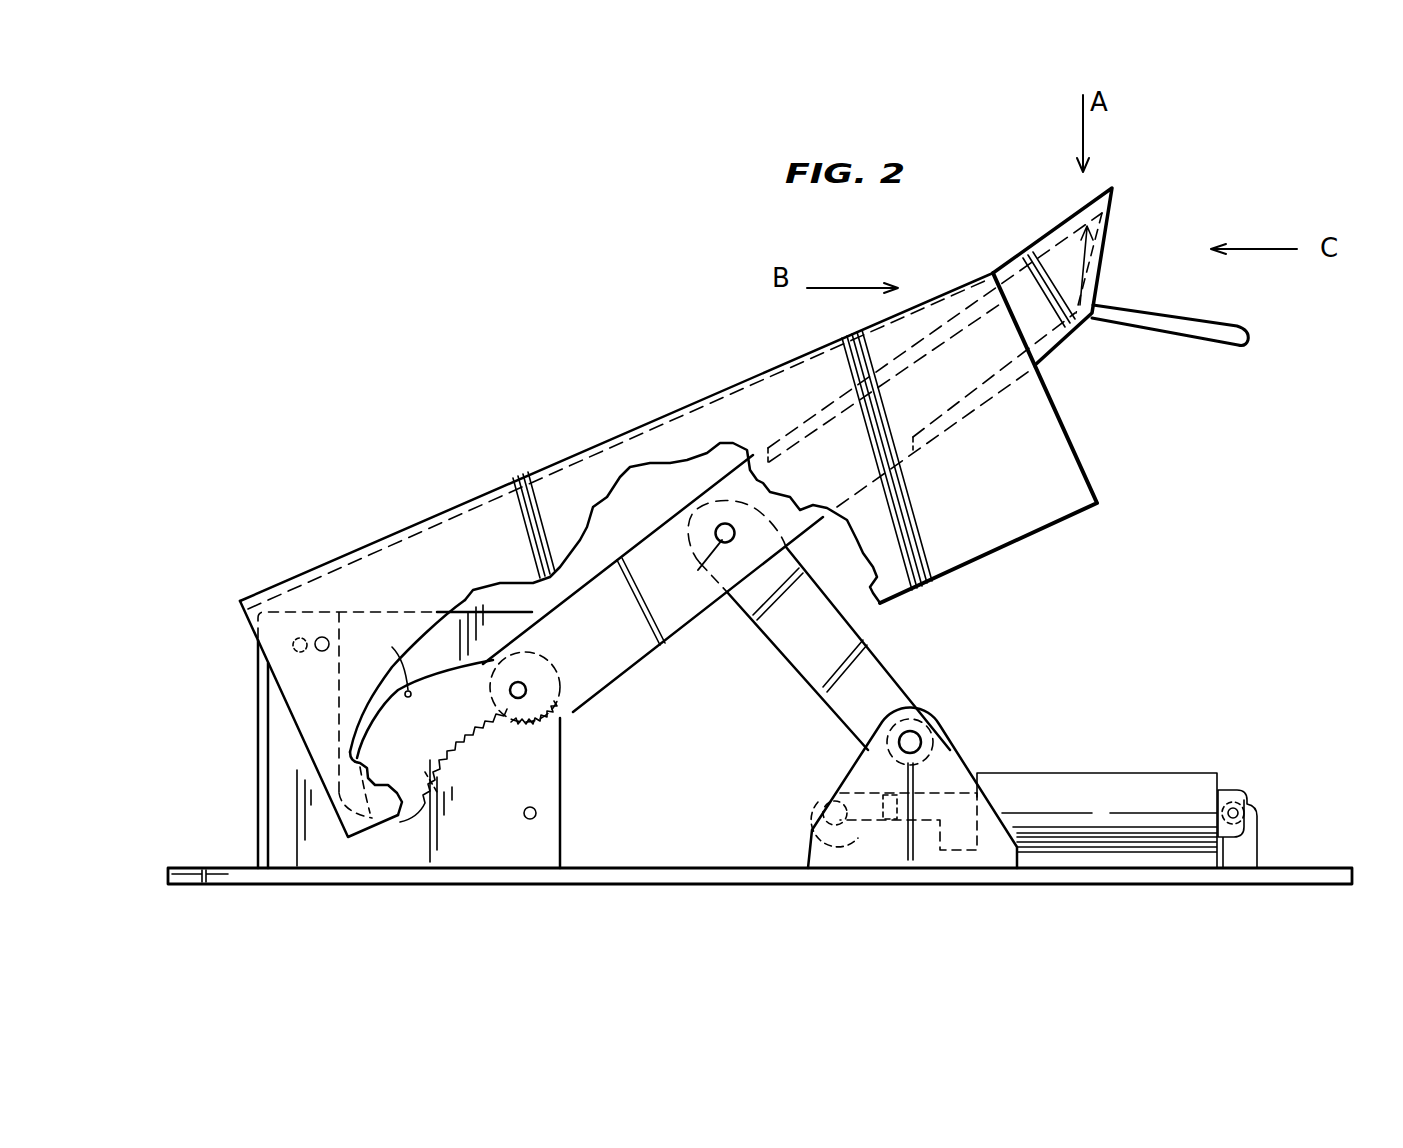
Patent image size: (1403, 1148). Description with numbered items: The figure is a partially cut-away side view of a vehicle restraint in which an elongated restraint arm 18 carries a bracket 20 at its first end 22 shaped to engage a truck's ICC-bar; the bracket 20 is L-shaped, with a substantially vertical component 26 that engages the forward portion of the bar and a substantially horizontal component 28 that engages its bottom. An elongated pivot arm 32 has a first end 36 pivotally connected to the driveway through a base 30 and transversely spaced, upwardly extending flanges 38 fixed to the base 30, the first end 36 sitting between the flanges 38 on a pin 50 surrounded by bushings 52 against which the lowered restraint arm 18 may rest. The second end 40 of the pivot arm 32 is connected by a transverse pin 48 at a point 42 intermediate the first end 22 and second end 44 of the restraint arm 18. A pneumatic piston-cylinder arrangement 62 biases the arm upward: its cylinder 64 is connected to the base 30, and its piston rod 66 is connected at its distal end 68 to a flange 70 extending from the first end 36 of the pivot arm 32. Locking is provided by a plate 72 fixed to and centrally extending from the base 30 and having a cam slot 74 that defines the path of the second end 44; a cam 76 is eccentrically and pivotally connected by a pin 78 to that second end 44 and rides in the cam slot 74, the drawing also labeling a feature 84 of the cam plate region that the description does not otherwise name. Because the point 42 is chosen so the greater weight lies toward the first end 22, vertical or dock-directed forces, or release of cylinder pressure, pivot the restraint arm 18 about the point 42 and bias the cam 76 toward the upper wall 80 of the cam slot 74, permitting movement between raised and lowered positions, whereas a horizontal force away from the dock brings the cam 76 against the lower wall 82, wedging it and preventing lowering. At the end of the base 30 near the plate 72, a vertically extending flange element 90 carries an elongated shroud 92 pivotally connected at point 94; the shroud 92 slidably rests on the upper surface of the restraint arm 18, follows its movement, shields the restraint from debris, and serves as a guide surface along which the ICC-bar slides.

The restraint arm 18 is at (668, 622).
The bracket 20 is at (1150, 317).
The first end 22 is at (1118, 196).
The vertical component 26 is at (1088, 278).
The horizontal component 28 is at (1130, 318).
The base 30 is at (1320, 865).
The pivot arm 32 is at (907, 688).
The first end 36 is at (964, 733).
The flanges 38 is at (892, 850).
The second end 40 is at (697, 530).
The point 42 is at (726, 523).
The second end 44 is at (567, 702).
The transverse pin 48 is at (697, 563).
The pin 50 is at (938, 720).
The bushings 52 is at (928, 755).
The piston-cylinder arrangement 62 is at (1149, 753).
The cylinder 64 is at (1220, 788).
The piston rod 66 is at (908, 829).
The distal end 68 is at (838, 797).
The flange 70 is at (847, 835).
The plate 72 is at (555, 835).
The cam slot 74 is at (450, 688).
The cam 76 is at (560, 668).
The pin 78 is at (520, 684).
The upper wall 80 is at (386, 659).
The lower wall 82 is at (453, 760).
The ratchet tooth 84 is at (437, 768).
The flange element 90 is at (332, 616).
The shroud 92 is at (512, 480).
The point 94 is at (322, 652).